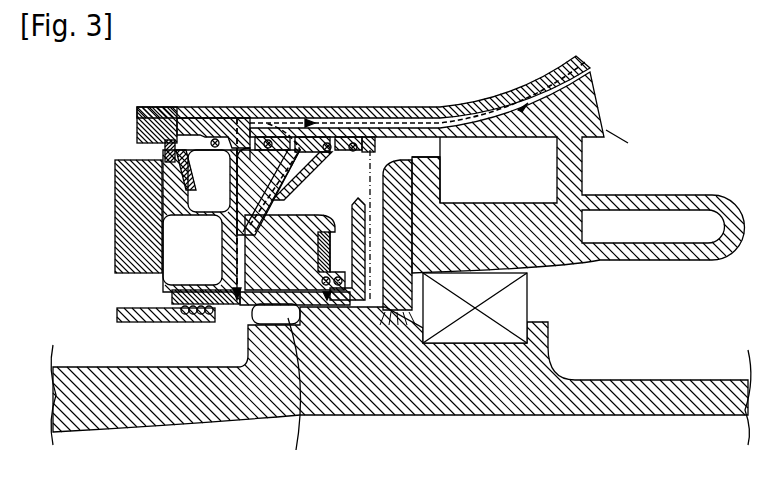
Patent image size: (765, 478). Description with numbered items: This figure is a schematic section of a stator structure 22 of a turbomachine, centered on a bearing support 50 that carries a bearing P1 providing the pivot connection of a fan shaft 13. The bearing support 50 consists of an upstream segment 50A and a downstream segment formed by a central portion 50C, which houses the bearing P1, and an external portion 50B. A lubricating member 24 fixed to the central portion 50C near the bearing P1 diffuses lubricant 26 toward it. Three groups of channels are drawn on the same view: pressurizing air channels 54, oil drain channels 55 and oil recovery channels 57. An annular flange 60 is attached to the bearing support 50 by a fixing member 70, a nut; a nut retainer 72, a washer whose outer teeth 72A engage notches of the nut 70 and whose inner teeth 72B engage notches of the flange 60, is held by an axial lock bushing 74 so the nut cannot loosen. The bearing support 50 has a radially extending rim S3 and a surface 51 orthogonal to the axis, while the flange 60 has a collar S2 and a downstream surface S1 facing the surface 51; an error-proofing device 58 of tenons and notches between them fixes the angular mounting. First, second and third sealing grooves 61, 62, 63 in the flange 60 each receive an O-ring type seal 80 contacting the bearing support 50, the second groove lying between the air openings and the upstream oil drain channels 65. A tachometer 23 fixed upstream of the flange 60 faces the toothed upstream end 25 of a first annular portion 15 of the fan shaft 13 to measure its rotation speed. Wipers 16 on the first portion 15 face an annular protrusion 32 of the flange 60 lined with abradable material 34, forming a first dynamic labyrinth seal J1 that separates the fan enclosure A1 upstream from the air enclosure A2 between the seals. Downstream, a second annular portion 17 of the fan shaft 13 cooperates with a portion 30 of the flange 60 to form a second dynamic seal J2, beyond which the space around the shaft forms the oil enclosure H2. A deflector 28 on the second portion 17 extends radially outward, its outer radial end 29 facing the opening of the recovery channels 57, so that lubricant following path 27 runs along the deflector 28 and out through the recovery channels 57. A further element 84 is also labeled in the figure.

The fan shaft 13 is at (481, 384).
The first annular portion 15 is at (222, 330).
The wipers 16 is at (180, 306).
The second annular portion 17 is at (291, 384).
The stator structure 22 is at (124, 95).
The tachometer 23 is at (138, 216).
The lubricating member 24 is at (402, 238).
The toothed upstream end 25 is at (142, 322).
The lubricant 26 is at (384, 313).
The lubricant path 27 is at (366, 200).
The deflector 28 is at (400, 212).
The outer radial end 29 is at (416, 158).
The portion of the flange 30 is at (332, 278).
The annular protrusion 32 is at (290, 302).
The abradable material 34 is at (208, 291).
The bearing support 50 is at (448, 108).
The upstream segment 50A is at (208, 118).
The external portion 50B is at (497, 172).
The central portion 50C is at (473, 234).
The surface of the bearing support 51 is at (366, 137).
The pressurizing air channels 54 is at (272, 130).
The oil drain channels 55 is at (290, 132).
The oil recovery channels 57 is at (400, 112).
The error-proofing device 58 is at (352, 140).
The flange 60 is at (268, 139).
The first sealing groove 61 is at (200, 221).
The second sealing groove 62 is at (180, 222).
The third sealing groove 63 is at (300, 158).
The upstream oil drain channels 65 is at (300, 132).
The fixing member 70 is at (137, 130).
The nut retainer 72 is at (184, 178).
The outer teeth 72A is at (204, 156).
The inner teeth 72B is at (216, 198).
The nut axial lock bushing 74 is at (165, 150).
The seal 80 is at (218, 138).
The seal ring 84 is at (244, 146).
The fan enclosure A1 is at (80, 272).
The air enclosure A2 is at (266, 209).
The oil enclosure H2 is at (316, 201).
The first dynamic labyrinth seal J1 is at (200, 325).
The second dynamic seal J2 is at (278, 314).
The bearing P1 is at (527, 303).
The downstream surface of the flange S1 is at (357, 225).
The collar S2 is at (178, 122).
The rim S3 is at (212, 125).